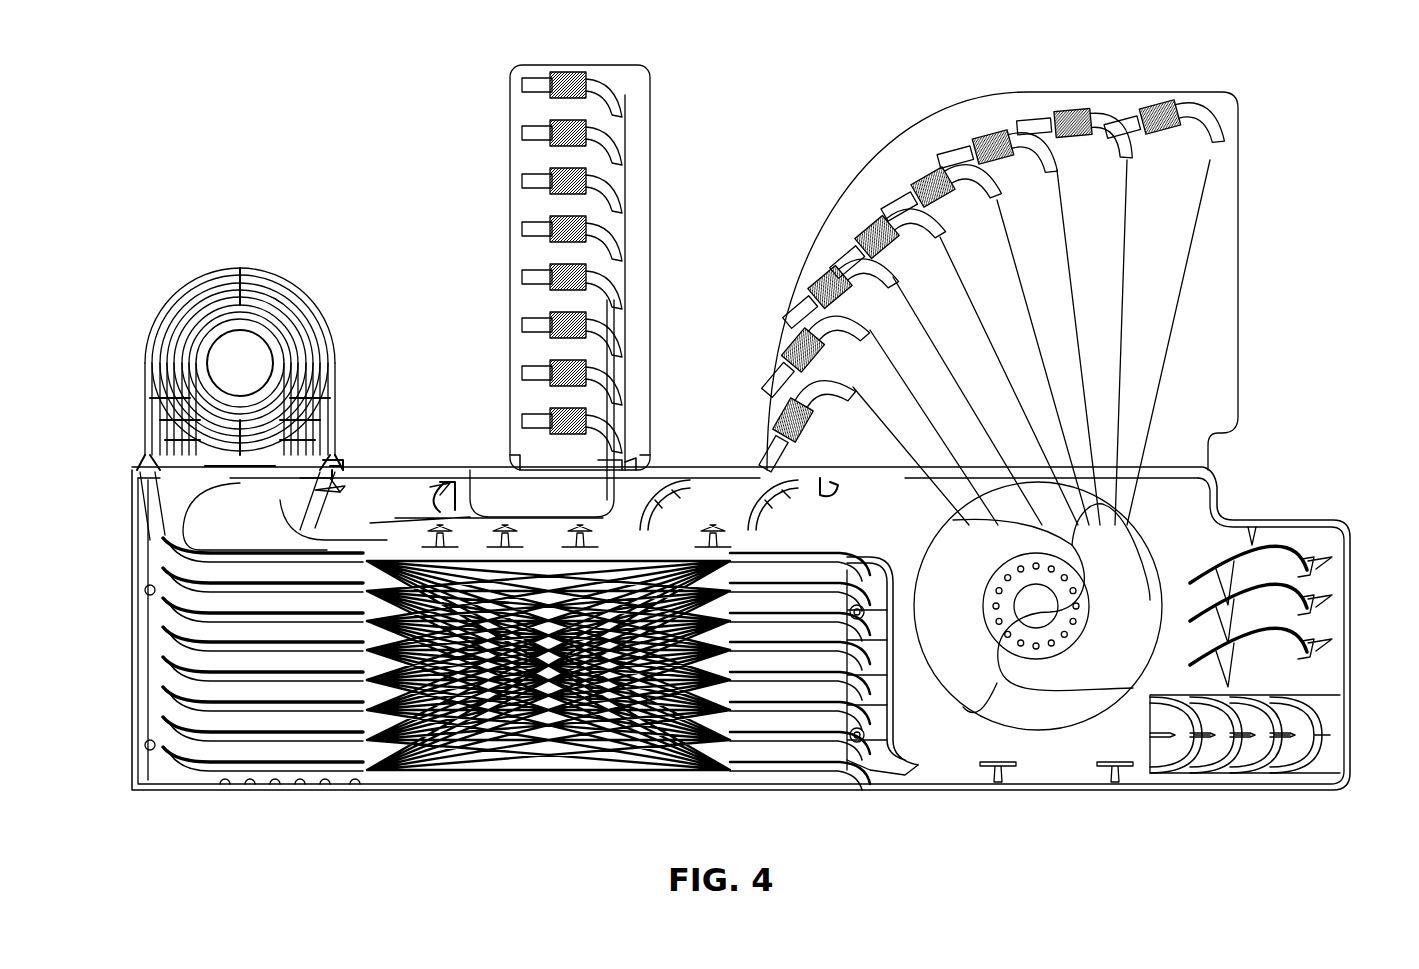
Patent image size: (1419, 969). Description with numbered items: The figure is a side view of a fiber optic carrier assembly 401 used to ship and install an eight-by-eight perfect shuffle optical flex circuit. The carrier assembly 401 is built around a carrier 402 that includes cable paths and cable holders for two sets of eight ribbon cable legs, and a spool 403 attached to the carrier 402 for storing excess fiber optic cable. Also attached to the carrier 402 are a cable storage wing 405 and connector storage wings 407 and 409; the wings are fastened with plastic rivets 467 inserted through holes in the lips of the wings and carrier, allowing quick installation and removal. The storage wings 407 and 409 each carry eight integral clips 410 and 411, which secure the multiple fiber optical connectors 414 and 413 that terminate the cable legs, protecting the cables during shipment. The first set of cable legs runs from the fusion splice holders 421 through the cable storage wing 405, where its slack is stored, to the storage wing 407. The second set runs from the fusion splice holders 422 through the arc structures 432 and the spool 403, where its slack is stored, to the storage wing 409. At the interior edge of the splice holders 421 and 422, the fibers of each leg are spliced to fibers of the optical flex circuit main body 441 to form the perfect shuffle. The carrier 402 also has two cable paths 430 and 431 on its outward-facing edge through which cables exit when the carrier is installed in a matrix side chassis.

The carrier assembly 401 is at (383, 138).
The carrier 402 is at (1348, 530).
The spool 403 is at (1140, 540).
The cable storage wing 405 is at (228, 272).
The connector storage wing 407 is at (652, 108).
The connector storage wing 409 is at (1090, 92).
The integral clips 410 is at (572, 70).
The integral clips 411 is at (988, 140).
The multiple fiber optical connectors 413 is at (962, 143).
The multiple fiber optical connectors 414 is at (535, 72).
The fusion splice holders 421 is at (268, 765).
The fusion splice holders 422 is at (780, 765).
The cable path 430 is at (406, 470).
The cable path 431 is at (678, 470).
The arc structures 432 is at (1212, 772).
The optical flex circuit main body 441 is at (535, 780).
The plastic rivets 467 is at (348, 456).